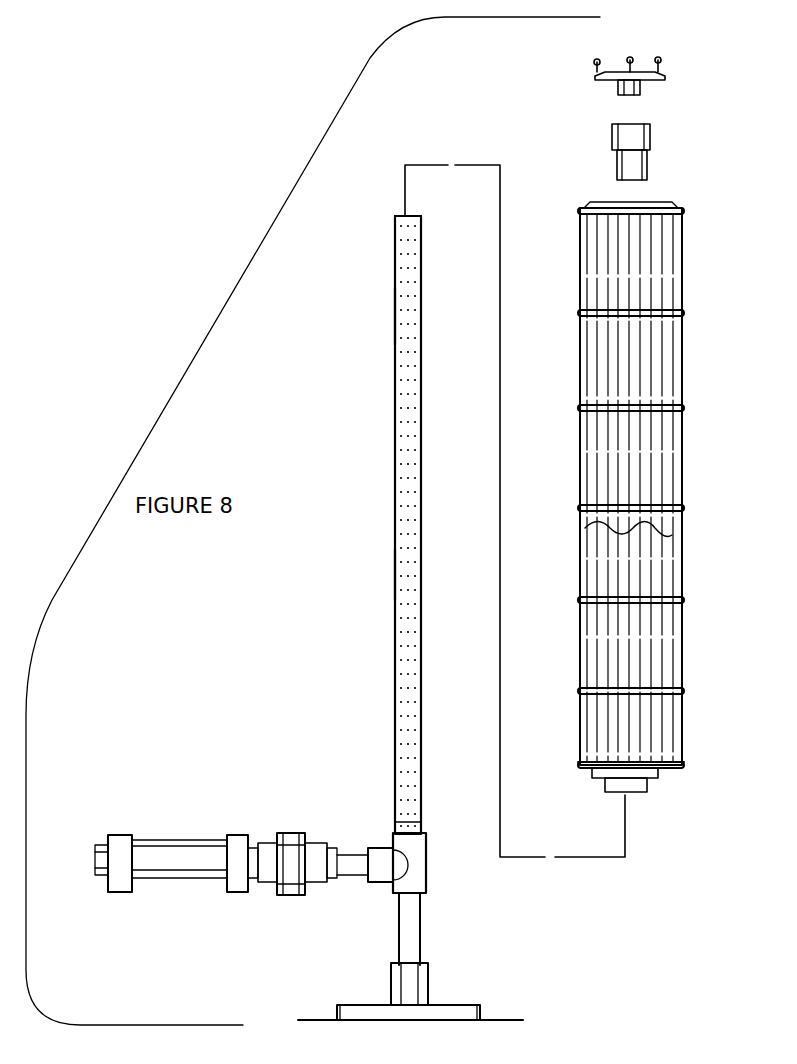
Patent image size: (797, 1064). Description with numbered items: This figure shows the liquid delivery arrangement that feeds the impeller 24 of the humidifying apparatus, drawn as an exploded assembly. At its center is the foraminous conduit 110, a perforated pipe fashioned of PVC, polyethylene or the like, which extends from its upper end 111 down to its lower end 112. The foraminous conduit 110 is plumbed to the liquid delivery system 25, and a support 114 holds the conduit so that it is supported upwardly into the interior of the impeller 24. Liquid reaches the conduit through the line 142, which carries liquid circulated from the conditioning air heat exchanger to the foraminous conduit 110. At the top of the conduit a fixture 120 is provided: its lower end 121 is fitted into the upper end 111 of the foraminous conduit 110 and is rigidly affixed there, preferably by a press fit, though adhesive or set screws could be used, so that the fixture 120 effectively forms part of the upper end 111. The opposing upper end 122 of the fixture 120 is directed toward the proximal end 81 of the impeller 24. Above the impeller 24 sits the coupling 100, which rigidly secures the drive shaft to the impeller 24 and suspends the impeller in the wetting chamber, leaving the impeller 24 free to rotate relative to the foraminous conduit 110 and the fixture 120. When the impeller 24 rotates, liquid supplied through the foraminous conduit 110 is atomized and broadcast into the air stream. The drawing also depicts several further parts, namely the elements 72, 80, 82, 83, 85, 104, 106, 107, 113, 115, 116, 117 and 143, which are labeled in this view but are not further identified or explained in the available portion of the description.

The impeller 24 is at (683, 538).
The liquid delivery system 25 is at (290, 836).
The ground surface 72 is at (518, 1020).
The filter cartridge 80 is at (683, 358).
The proximal end 81 is at (684, 205).
The bottom cap 82 is at (686, 767).
The filter media 83 is at (582, 538).
The retaining bands 85 is at (578, 313).
The coupling 100 is at (643, 89).
The screws 104 is at (597, 57).
The bottom fitting 106 is at (648, 787).
The bottom flange 107 is at (598, 778).
The foraminous conduit 110 is at (422, 522).
The upper end 111 is at (400, 215).
The lower end 112 is at (421, 822).
The tee fitting 113 is at (426, 866).
The support 114 is at (421, 926).
The base coupling 115 is at (448, 1003).
The base plate 116 is at (343, 1004).
The perforations 117 is at (395, 288).
The fixture 120 is at (652, 136).
The lower end 121 is at (648, 180).
The upper end 122 is at (612, 130).
The line 142 is at (105, 845).
The valve body 143 is at (175, 852).